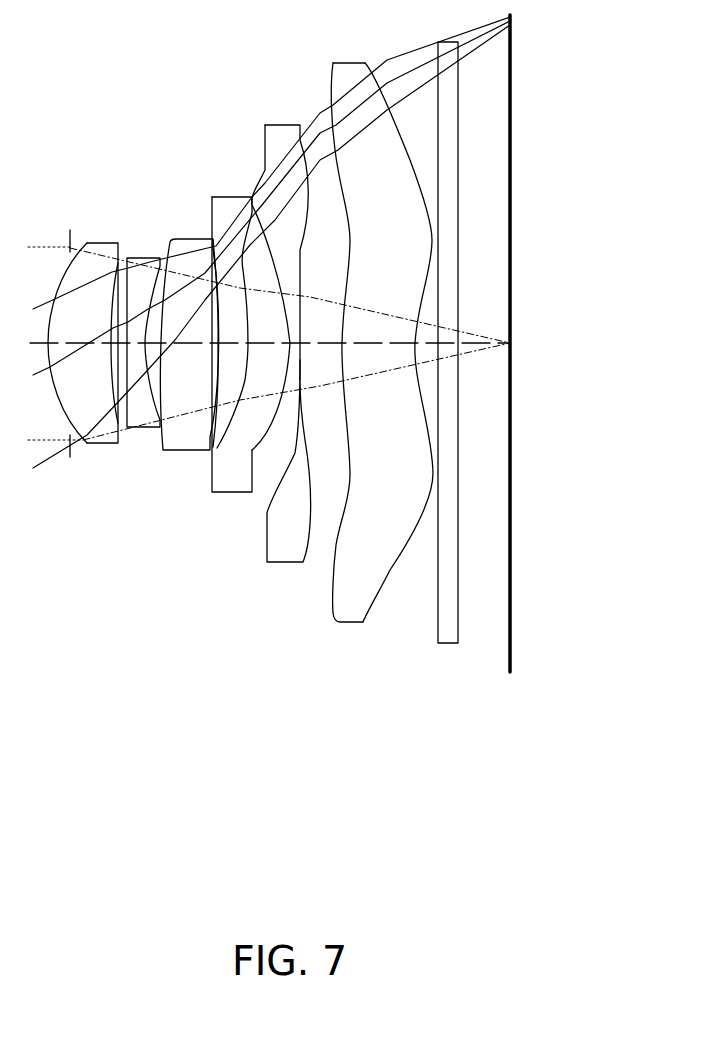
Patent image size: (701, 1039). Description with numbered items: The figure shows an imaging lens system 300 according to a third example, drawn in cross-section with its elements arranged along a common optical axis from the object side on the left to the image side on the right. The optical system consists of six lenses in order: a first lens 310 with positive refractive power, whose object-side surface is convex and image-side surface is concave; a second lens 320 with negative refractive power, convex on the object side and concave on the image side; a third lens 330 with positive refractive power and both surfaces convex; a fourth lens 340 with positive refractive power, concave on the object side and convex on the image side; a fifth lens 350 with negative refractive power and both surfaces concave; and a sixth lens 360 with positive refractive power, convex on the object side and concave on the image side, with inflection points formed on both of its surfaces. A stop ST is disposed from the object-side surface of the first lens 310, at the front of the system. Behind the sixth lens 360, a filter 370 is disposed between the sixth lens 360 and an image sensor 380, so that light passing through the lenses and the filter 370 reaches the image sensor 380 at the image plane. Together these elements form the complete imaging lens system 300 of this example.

The imaging lens system 300 is at (150, 108).
The stop ST is at (73, 232).
The first lens 310 is at (100, 447).
The second lens 320 is at (143, 430).
The third lens 330 is at (183, 452).
The fourth lens 340 is at (228, 493).
The fifth lens 350 is at (280, 563).
The sixth lens 360 is at (350, 623).
The filter 370 is at (443, 645).
The image sensor 380 is at (514, 646).